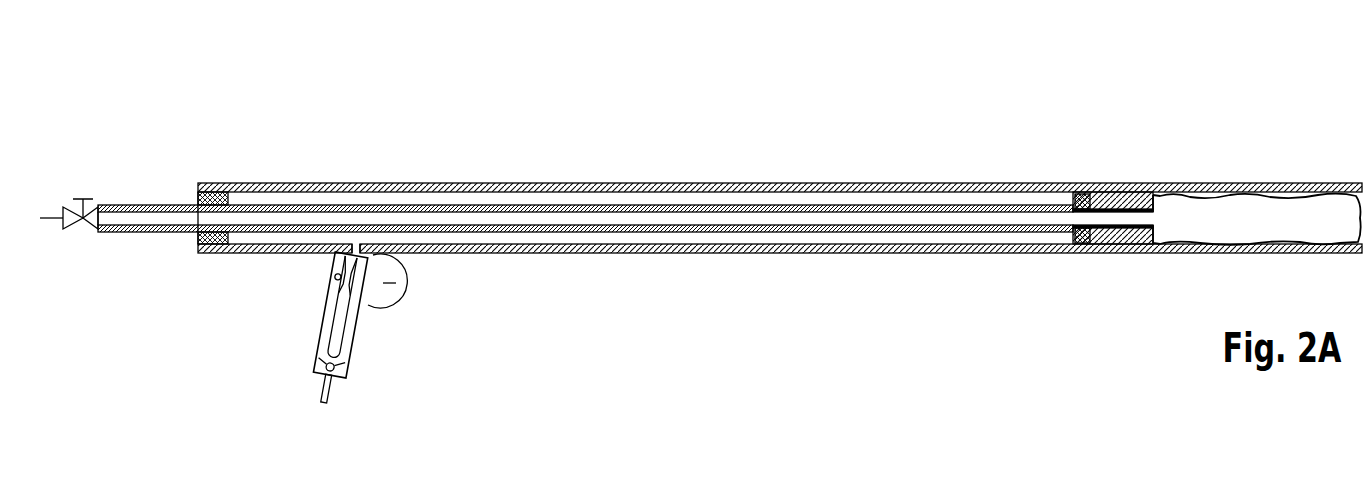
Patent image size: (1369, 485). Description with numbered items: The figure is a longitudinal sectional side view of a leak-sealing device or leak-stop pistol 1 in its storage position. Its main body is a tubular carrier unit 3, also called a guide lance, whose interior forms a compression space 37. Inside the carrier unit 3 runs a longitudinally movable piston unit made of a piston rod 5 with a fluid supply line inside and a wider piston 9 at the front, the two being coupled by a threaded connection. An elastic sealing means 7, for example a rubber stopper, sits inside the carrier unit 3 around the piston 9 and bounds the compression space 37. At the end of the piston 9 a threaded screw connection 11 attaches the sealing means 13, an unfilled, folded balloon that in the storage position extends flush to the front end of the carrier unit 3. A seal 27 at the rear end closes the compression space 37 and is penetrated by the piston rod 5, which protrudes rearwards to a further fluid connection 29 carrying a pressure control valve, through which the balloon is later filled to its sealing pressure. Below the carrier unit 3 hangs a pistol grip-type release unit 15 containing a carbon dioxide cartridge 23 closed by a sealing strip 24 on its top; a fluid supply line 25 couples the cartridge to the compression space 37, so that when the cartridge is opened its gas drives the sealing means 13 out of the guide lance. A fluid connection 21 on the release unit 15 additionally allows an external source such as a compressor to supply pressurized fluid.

The leak-stop pistol 1 is at (322, 95).
The carrier unit 3 is at (640, 186).
The piston rod 5 is at (555, 210).
The sealing means 7 is at (1085, 200).
The piston 9 is at (1130, 198).
The threaded screw connection 11 is at (1135, 246).
The sealing means 13 is at (1228, 215).
The release unit 15 is at (355, 352).
The fluid connection 21 is at (320, 385).
The carbon dioxide cartridge 23 is at (337, 321).
The sealing strip 24 is at (333, 258).
The fluid supply line 25 is at (353, 258).
The seal 27 is at (226, 200).
The fluid connection 29 is at (92, 198).
The compression space 37 is at (465, 203).